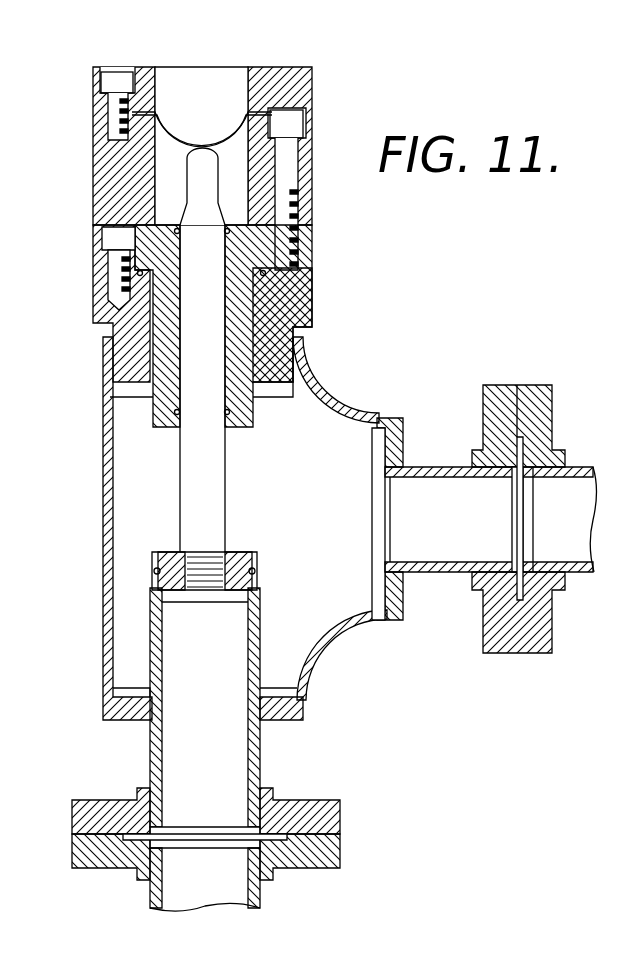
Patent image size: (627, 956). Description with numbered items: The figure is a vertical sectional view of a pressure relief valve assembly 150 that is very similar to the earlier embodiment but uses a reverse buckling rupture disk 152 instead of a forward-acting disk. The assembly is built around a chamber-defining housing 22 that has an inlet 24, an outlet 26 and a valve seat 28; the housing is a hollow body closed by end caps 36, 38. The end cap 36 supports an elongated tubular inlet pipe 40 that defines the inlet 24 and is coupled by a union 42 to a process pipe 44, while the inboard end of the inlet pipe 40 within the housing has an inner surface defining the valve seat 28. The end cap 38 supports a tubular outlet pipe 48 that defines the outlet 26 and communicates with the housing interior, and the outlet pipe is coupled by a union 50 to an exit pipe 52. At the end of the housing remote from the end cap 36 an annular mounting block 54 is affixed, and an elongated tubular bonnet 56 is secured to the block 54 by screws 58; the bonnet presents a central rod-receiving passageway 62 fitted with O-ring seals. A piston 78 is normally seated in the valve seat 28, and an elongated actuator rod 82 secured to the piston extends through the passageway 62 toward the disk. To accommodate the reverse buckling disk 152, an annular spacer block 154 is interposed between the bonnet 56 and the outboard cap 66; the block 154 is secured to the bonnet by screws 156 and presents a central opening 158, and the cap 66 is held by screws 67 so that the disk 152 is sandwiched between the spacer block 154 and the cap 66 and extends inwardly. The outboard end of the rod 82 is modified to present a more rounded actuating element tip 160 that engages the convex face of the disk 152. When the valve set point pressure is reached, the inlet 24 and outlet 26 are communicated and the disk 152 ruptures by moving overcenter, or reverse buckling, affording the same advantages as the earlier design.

The valve assembly 150 is at (314, 472).
The reverse buckling disk 152 is at (178, 127).
The annular spacer block 154 is at (107, 193).
The screws 156 is at (288, 162).
The central opening 158 is at (167, 172).
The actuating element tip 160 is at (203, 152).
The outboard cap 66 is at (297, 88).
The screws 67 is at (110, 80).
The annular mounting block 54 is at (310, 287).
The bonnet 56 is at (163, 402).
The screws 58 is at (110, 262).
The rod-receiving passageway 62 is at (178, 400).
The actuator rod 82 is at (217, 503).
The end cap 36 is at (112, 715).
The housing 22 is at (330, 378).
The inlet 24 is at (265, 643).
The outlet 26 is at (432, 461).
The end cap 38 is at (397, 610).
The outlet pipe 48 is at (448, 572).
The exit pipe 52 is at (583, 465).
The union 50 is at (545, 637).
The valve seat 28 is at (258, 553).
The piston 78 is at (165, 552).
The inlet pipe 40 is at (255, 753).
The union 42 is at (330, 817).
The process pipe 44 is at (157, 893).